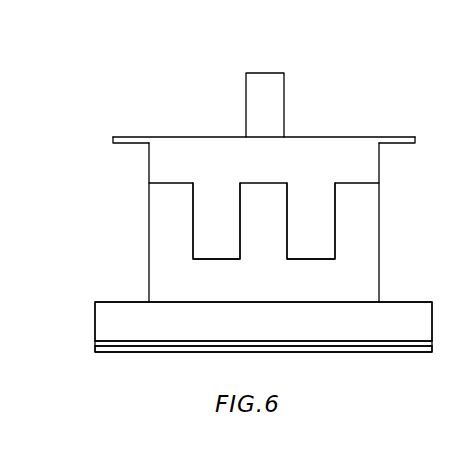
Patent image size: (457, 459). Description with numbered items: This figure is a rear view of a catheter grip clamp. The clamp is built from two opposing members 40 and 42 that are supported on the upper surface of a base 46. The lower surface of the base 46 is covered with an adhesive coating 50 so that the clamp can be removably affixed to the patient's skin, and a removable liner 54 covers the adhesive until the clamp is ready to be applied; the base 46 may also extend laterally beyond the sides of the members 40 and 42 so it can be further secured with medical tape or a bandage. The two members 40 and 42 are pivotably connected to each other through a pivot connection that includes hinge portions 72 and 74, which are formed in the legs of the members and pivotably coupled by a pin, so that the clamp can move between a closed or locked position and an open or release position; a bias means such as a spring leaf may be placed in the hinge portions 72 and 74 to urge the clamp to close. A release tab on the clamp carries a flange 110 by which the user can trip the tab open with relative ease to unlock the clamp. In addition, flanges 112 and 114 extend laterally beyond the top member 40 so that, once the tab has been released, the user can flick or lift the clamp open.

The opposing member 40 is at (189, 152).
The opposing member 42 is at (363, 283).
The base 46 is at (127, 314).
The adhesive coating 50 is at (115, 342).
The removable liner 54 is at (158, 352).
The hinge portion 72 is at (208, 236).
The hinge portion 74 is at (272, 200).
The flange 110 is at (270, 107).
The flange 112 is at (125, 137).
The flange 114 is at (402, 137).